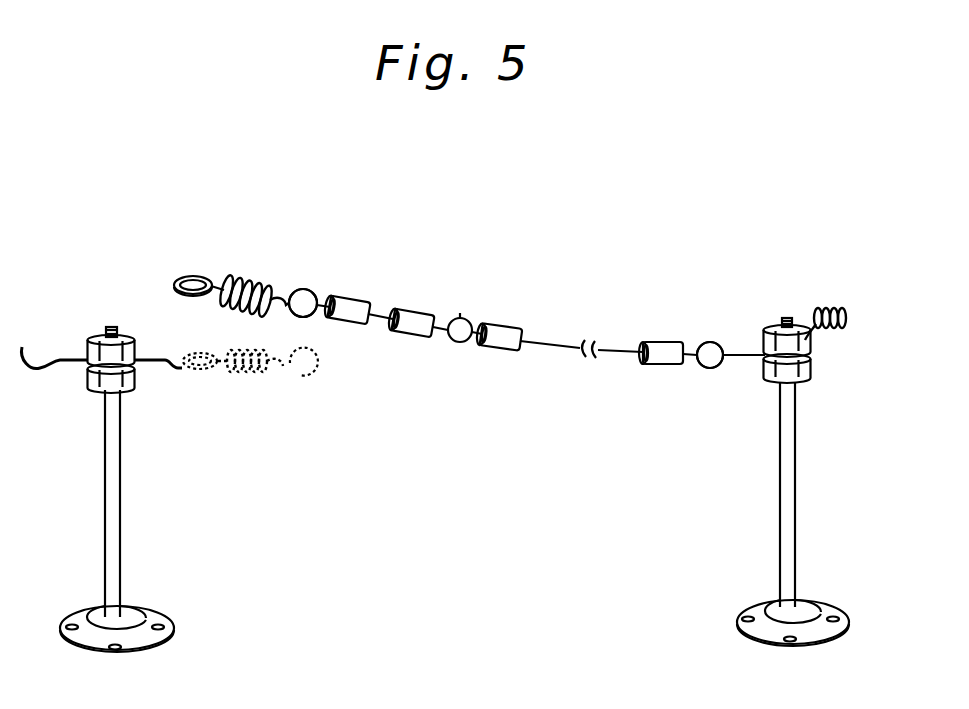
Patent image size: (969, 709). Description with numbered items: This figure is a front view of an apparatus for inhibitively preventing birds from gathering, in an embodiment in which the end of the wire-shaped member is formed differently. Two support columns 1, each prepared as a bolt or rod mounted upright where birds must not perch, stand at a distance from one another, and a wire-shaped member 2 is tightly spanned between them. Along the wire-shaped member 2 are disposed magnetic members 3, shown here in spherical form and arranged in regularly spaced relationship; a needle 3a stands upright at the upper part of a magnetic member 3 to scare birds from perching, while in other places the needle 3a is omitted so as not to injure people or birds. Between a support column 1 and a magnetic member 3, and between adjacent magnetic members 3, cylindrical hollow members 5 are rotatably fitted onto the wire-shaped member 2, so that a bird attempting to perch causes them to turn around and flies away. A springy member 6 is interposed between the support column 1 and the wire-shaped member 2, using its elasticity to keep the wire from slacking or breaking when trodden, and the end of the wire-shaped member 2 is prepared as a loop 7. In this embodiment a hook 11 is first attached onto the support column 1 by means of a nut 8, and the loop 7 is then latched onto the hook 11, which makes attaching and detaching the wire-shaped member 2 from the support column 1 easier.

The support column 1 is at (120, 542).
The wire-shaped member 2 is at (383, 317).
The magnetic member 3 is at (313, 306).
The needle 3a is at (305, 292).
The cylindrical hollow member 5 is at (342, 320).
The springy member 6 is at (240, 282).
The loop 7 is at (195, 276).
The nut 8 is at (90, 340).
The hook 11 is at (77, 363).